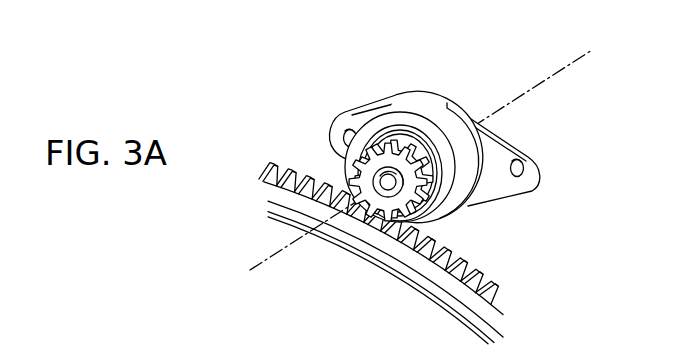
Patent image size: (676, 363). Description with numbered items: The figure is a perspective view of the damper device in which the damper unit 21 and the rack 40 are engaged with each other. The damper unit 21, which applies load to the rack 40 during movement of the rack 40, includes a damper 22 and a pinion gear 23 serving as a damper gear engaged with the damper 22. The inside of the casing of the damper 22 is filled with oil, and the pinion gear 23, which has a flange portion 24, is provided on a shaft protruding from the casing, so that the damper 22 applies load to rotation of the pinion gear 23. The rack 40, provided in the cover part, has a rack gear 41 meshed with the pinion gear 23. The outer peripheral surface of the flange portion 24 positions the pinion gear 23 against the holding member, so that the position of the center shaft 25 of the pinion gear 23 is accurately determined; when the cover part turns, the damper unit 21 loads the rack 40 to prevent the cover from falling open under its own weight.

The damper unit 21 is at (452, 73).
The damper 22 is at (465, 147).
The pinion gear 23 is at (382, 142).
The flange portion 24 is at (409, 148).
The center shaft 25 is at (288, 247).
The rack 40 is at (477, 300).
The rack gear 41 is at (453, 246).